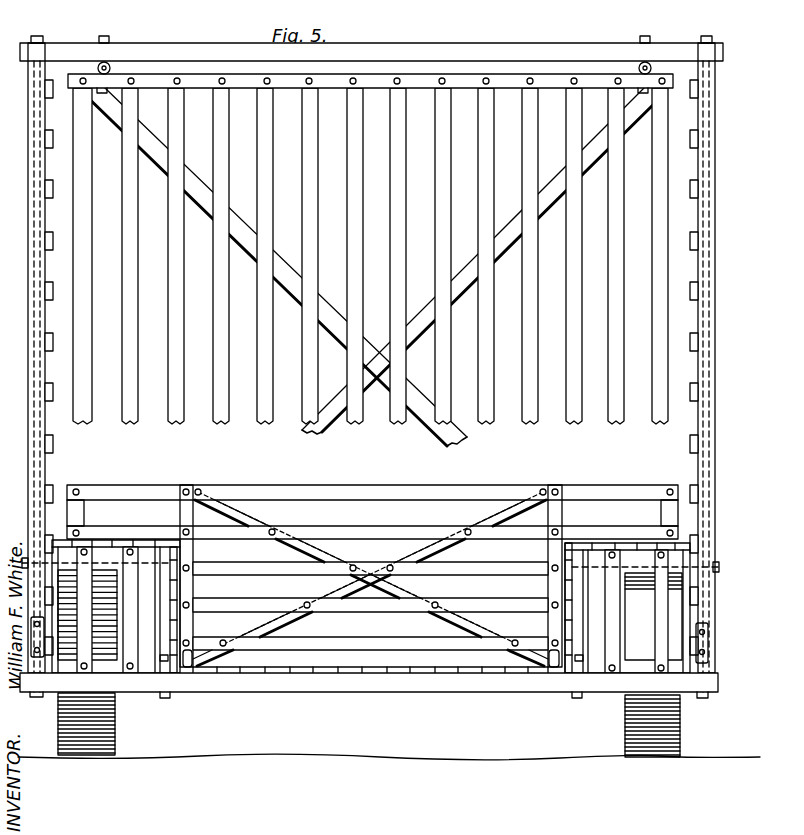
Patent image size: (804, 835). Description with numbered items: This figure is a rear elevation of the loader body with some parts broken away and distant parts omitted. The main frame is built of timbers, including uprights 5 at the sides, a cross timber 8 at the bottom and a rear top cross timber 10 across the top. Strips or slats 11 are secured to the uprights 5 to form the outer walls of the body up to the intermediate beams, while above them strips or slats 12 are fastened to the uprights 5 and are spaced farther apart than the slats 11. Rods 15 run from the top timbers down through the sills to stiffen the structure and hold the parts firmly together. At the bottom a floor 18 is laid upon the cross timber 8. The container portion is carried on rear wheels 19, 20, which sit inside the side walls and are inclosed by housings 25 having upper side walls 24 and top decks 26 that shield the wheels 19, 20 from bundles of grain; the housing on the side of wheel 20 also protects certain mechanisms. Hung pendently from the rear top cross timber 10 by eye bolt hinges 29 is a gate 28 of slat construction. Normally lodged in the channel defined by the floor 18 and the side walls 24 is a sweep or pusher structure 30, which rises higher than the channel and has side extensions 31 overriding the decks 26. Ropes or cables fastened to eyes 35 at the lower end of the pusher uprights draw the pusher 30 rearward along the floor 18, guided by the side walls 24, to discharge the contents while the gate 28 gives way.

The upright 5 is at (27, 271).
The cross timber 8 is at (412, 693).
The rear top cross timber 10 is at (204, 53).
The strip or slat 11 is at (54, 447).
The strip or slat 12 is at (51, 197).
The rod 15 is at (712, 226).
The floor 18 is at (353, 678).
The rear wheel 19 is at (681, 724).
The rear wheel 20 is at (115, 727).
The upper side wall 24 is at (178, 562).
The housing 25 is at (143, 603).
The deck 26 is at (136, 546).
The gate 28 is at (370, 260).
The eye bolt hinge 29 is at (109, 64).
The sweep or pusher structure 30 is at (367, 492).
The side extension 31 is at (118, 493).
The eye 35 is at (189, 668).